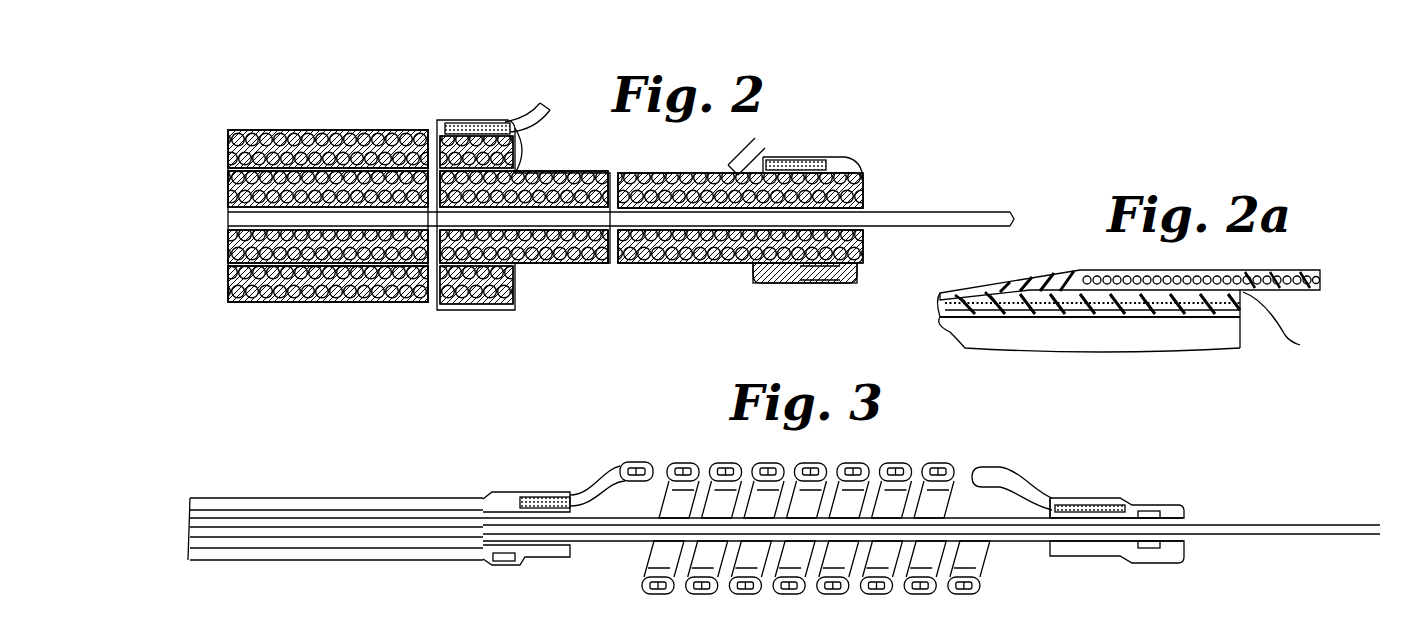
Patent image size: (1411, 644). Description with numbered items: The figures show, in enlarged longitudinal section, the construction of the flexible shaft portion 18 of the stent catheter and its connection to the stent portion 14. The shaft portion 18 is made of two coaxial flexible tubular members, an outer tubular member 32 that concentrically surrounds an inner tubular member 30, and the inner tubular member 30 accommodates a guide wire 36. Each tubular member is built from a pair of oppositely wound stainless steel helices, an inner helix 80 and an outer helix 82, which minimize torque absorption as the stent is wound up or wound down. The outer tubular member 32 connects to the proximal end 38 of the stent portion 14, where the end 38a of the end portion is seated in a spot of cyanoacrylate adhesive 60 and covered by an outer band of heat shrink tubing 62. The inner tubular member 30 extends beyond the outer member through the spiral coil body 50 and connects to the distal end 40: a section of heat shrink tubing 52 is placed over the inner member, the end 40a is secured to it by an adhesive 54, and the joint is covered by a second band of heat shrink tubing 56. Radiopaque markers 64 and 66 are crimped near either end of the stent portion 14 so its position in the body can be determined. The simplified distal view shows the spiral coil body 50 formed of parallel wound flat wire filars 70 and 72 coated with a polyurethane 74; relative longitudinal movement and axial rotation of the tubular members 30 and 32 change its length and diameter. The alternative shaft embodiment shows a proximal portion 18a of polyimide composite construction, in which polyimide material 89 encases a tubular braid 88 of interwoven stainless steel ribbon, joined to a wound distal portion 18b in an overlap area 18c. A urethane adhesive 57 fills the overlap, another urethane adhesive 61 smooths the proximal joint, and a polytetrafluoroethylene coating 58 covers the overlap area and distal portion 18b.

In FIG. 3, the stent portion 14 is at (915, 462).
In FIG. 2, the shaft portion 18 is at (340, 122).
In FIG. 2A, the shaft portion 18 is at (1298, 258).
In FIG. 3, the shaft portion 18 is at (235, 480).
In FIG. 2A, the proximal portion 18a is at (968, 288).
In FIG. 2A, the distal portion 18b is at (1302, 268).
In FIG. 2A, the overlap area 18c is at (1147, 332).
In FIG. 2, the inner tubular member 30 is at (228, 200).
In FIG. 3, the inner tubular member 30 is at (190, 513).
In FIG. 2, the outer tubular member 32 is at (228, 148).
In FIG. 3, the outer tubular member 32 is at (190, 505).
In FIG. 2, the guide wire 36 is at (990, 212).
In FIG. 3, the guide wire 36 is at (1300, 525).
In FIG. 2, the proximal end 38 is at (532, 105).
In FIG. 3, the proximal end 38 is at (608, 462).
In FIG. 2, the end of proximal end portion 38a is at (482, 122).
In FIG. 3, the end of proximal end portion 38a is at (535, 497).
In FIG. 2, the distal end 40 is at (745, 145).
In FIG. 3, the distal end 40 is at (1022, 490).
In FIG. 2, the end of distal end portion 40a is at (790, 158).
In FIG. 3, the end of distal end portion 40a is at (1098, 505).
In FIG. 3, the spiral coil body 50 is at (712, 594).
In FIG. 2, the heat shrink tubing 52 is at (866, 180).
In FIG. 3, the heat shrink tubing 52 is at (1185, 515).
In FIG. 2, the adhesive 54 is at (772, 158).
In FIG. 3, the adhesive 54 is at (1075, 505).
In FIG. 2, the second band of heat shrink tubing 56 is at (832, 165).
In FIG. 3, the second band of heat shrink tubing 56 is at (1170, 505).
In FIG. 2A, the urethane adhesive 57 is at (1290, 340).
In FIG. 2A, the polytetrafluoroethylene coating 58 is at (1230, 271).
In FIG. 2, the cyanoacrylate adhesive 60 is at (458, 122).
In FIG. 3, the cyanoacrylate adhesive 60 is at (522, 497).
In FIG. 2A, the urethane adhesive 61 is at (1062, 284).
In FIG. 2, the outer band of heat shrink tubing 62 is at (370, 130).
In FIG. 3, the outer band of heat shrink tubing 62 is at (410, 498).
In FIG. 2, the radiopaque marker 64 is at (820, 284).
In FIG. 3, the radiopaque marker 64 is at (1165, 511).
In FIG. 2, the radiopaque marker 66 is at (520, 147).
In FIG. 3, the radiopaque marker 66 is at (497, 562).
In FIG. 3, the filar 70 is at (683, 463).
In FIG. 3, the filar 72 is at (690, 463).
In FIG. 3, the polyurethane coating 74 is at (658, 594).
In FIG. 2, the inner helix 80 is at (325, 303).
In FIG. 2A, the inner helix 80 is at (1324, 282).
In FIG. 2, the outer helix 82 is at (300, 303).
In FIG. 2A, the tubular braid 88 is at (944, 310).
In FIG. 2A, the polyimide material 89 is at (965, 298).